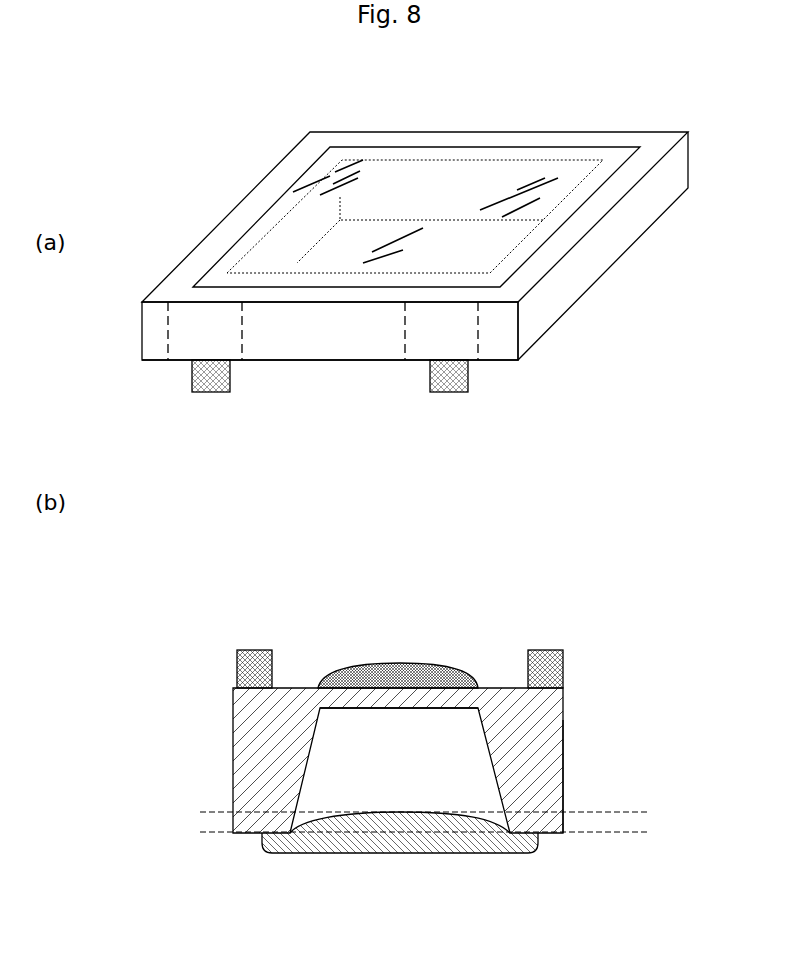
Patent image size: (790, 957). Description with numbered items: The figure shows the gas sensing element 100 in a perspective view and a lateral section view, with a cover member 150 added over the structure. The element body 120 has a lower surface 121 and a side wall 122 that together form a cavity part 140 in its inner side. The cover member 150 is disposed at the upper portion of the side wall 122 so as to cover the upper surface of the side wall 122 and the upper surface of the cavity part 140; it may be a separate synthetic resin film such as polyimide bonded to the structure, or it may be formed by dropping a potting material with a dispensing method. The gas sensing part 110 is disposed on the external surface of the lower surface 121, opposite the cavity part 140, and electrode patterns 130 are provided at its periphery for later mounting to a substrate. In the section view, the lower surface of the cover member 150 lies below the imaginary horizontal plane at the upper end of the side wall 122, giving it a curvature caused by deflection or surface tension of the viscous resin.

The light emitting device package 100 is at (292, 625).
The gas sensing part 110 is at (403, 662).
The element body 120 is at (688, 285).
The lower surface 121 is at (508, 237).
The side wall 122 is at (552, 296).
The electrode patterns 130 is at (470, 380).
The cavity part 140 is at (343, 240).
The cover member 150 is at (468, 160).